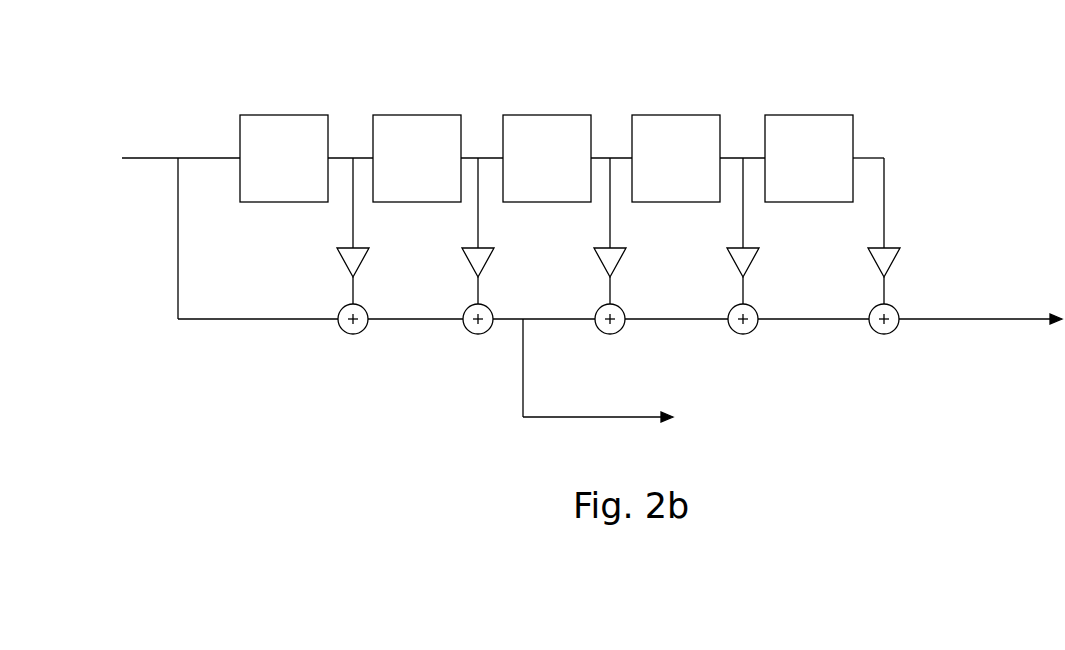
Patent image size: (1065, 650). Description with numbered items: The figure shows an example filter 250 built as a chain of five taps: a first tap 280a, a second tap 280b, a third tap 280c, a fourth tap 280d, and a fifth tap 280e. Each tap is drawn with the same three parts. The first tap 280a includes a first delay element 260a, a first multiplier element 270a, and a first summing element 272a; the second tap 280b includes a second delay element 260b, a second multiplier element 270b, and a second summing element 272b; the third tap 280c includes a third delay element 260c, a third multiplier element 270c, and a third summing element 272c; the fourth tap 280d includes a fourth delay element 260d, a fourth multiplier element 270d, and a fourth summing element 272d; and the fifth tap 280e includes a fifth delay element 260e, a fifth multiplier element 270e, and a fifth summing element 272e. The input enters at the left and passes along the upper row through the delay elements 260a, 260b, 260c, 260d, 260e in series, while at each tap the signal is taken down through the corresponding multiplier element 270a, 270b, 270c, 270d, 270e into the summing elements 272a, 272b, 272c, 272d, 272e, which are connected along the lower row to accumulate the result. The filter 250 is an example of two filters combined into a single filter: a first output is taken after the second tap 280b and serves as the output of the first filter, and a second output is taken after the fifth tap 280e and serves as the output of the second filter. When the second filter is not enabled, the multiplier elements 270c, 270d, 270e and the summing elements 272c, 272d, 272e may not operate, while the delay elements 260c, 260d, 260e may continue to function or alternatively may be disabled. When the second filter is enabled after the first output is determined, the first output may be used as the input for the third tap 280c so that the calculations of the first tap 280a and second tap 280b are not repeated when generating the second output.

The filter 250 is at (946, 94).
The first delay element 260a is at (306, 158).
The second delay element 260b is at (438, 158).
The third delay element 260c is at (567, 158).
The fourth delay element 260d is at (698, 158).
The fifth delay element 260e is at (824, 158).
The first multiplier element 270a is at (337, 266).
The second multiplier element 270b is at (462, 266).
The third multiplier element 270c is at (594, 266).
The fourth multiplier element 270d is at (727, 266).
The fifth multiplier element 270e is at (868, 266).
The first summing element 272a is at (342, 333).
The second summing element 272b is at (467, 333).
The third summing element 272c is at (599, 333).
The fourth summing element 272d is at (732, 333).
The fifth summing element 272e is at (873, 333).
The first tap 280a is at (277, 202).
The second tap 280b is at (415, 202).
The third tap 280c is at (554, 202).
The fourth tap 280d is at (680, 202).
The fifth tap 280e is at (821, 202).